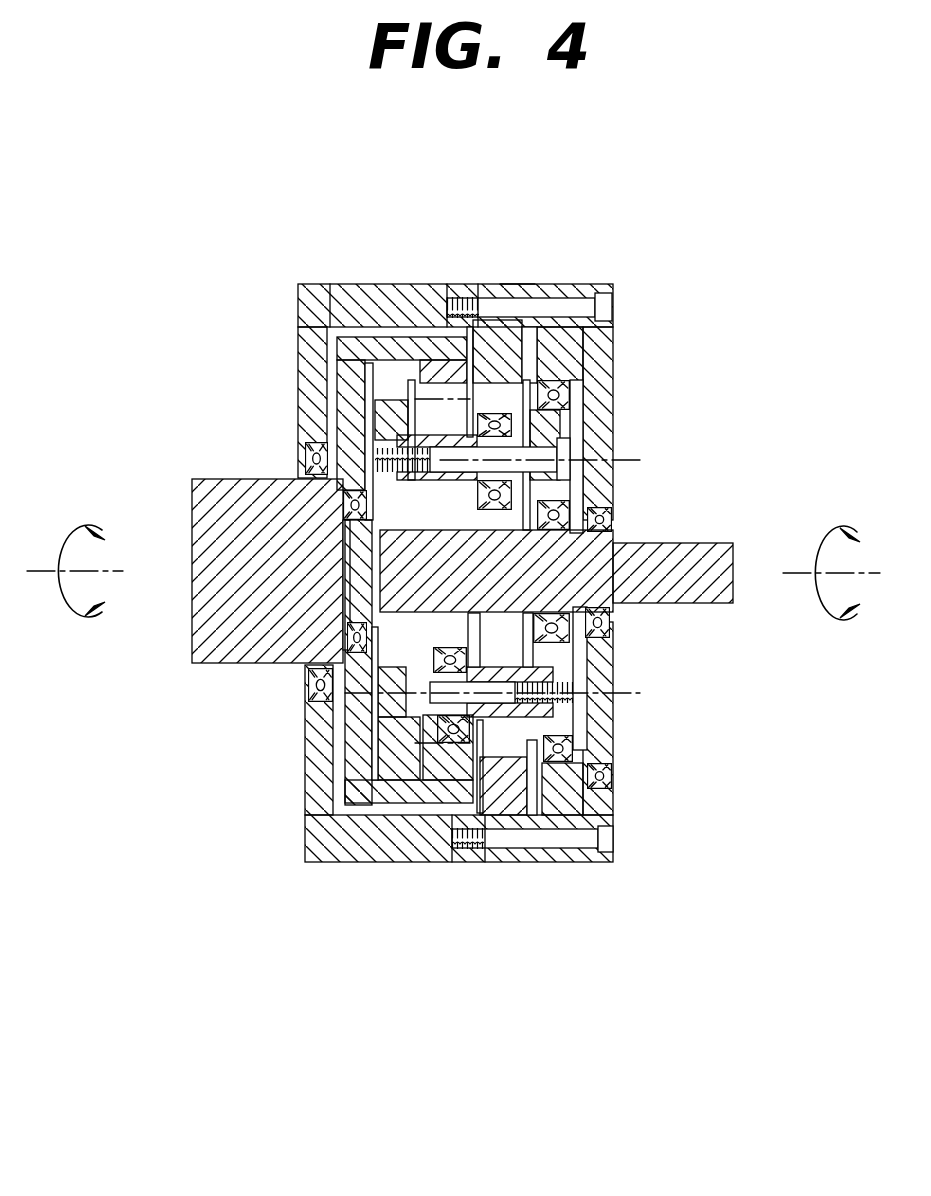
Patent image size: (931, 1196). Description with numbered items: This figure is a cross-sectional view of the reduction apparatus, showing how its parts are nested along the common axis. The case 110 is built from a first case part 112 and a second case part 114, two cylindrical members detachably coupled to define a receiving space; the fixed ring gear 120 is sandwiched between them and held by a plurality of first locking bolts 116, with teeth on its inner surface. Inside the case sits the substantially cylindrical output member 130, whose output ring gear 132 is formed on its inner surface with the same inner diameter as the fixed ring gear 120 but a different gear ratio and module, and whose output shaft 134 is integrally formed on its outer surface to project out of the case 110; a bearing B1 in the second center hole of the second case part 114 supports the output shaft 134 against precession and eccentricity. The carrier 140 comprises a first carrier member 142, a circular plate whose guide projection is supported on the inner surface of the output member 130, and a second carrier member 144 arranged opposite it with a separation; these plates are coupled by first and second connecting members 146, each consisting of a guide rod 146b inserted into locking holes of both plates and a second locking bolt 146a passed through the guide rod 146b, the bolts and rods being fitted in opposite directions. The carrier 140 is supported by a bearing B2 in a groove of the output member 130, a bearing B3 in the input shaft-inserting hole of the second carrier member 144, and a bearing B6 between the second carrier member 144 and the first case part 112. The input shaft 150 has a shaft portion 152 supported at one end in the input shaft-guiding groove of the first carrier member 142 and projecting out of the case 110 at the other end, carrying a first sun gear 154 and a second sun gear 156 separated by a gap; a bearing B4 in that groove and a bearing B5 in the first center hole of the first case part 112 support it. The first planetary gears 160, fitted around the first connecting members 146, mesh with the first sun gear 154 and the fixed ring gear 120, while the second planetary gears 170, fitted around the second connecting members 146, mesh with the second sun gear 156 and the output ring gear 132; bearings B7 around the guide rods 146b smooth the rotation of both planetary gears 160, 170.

The case 110 is at (298, 284).
The first case part 112 is at (573, 862).
The second case part 114 is at (345, 335).
The first locking bolts 116 is at (612, 305).
The fixed ring gear 120 is at (517, 284).
The output member 130 is at (440, 332).
The output ring gear 132 is at (410, 397).
The output shaft 134 is at (213, 503).
The carrier 140 is at (448, 723).
The first carrier member 142 is at (368, 760).
The second carrier member 144 is at (528, 780).
The first and second connecting members 146 is at (568, 562).
The second locking bolt 146a is at (575, 440).
The guide rod 146b is at (550, 395).
The input shaft 150 is at (702, 540).
The shaft portion 152 is at (733, 587).
The first sun gear 154 is at (395, 640).
The second sun gear 156 is at (340, 352).
The first planetary gears 160 is at (566, 305).
The second planetary gears 170 is at (425, 752).
The bearing B1 is at (312, 448).
The bearing B2 is at (345, 492).
The bearing B3 is at (573, 643).
The bearing B4 is at (330, 694).
The bearing B5 is at (600, 512).
The bearing B6 is at (598, 788).
The bearings B7 is at (474, 300).